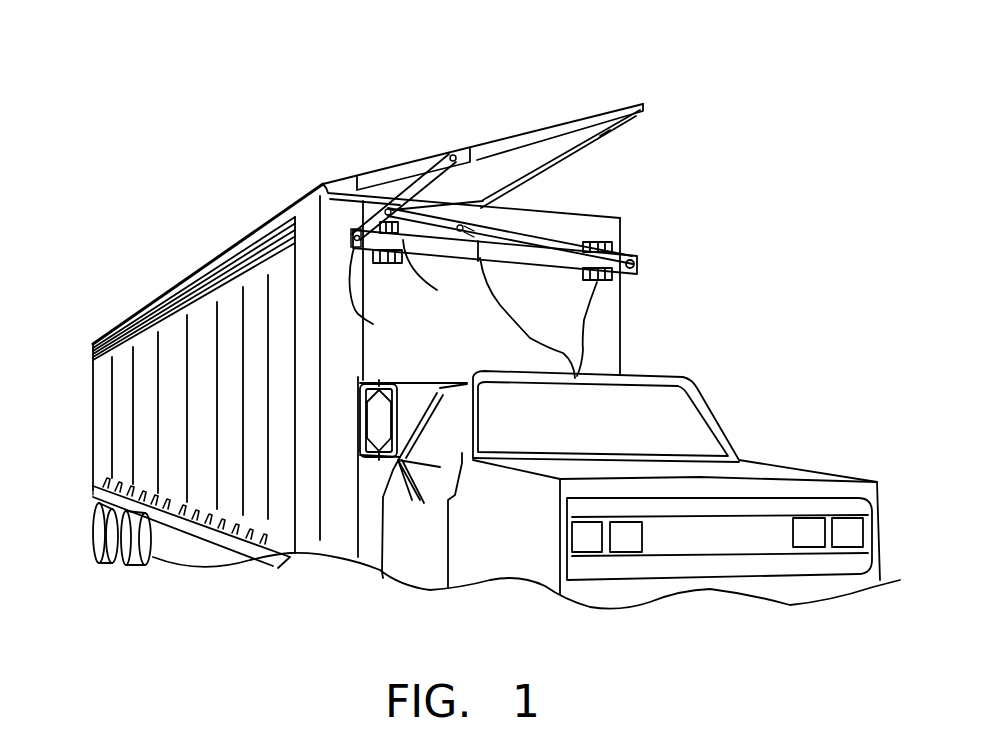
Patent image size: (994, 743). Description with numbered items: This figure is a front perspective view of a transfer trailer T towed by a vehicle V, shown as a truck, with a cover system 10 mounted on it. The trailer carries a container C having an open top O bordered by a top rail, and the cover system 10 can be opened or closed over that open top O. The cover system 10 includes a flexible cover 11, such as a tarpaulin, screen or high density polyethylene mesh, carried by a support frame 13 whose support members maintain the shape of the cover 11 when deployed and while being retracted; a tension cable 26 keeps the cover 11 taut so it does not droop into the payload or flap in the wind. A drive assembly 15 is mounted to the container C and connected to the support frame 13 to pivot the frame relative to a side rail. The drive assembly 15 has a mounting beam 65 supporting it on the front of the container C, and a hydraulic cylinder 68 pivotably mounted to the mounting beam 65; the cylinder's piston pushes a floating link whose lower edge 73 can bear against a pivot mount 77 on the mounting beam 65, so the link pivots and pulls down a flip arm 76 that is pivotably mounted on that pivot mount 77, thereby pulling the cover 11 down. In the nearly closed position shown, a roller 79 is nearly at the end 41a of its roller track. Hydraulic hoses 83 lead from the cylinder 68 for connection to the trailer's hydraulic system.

The cover system 10 is at (336, 151).
The flip arm 76 is at (420, 190).
The roller 79 is at (453, 153).
The end of the roller track 41a is at (455, 153).
The support frame 13 is at (558, 127).
The tension cable 26 is at (603, 137).
The cover 11 is at (570, 140).
The open top O is at (552, 191).
The cylinder 68 is at (548, 226).
The drive assembly 15 is at (585, 238).
The mounting beam 65 is at (351, 240).
The lower edge of the floating link 73 is at (436, 277).
The pivot mount 77 is at (379, 297).
The hydraulic hoses 83 is at (585, 338).
The vehicle V is at (650, 378).
The transfer trailer T is at (86, 416).
The container C is at (93, 456).